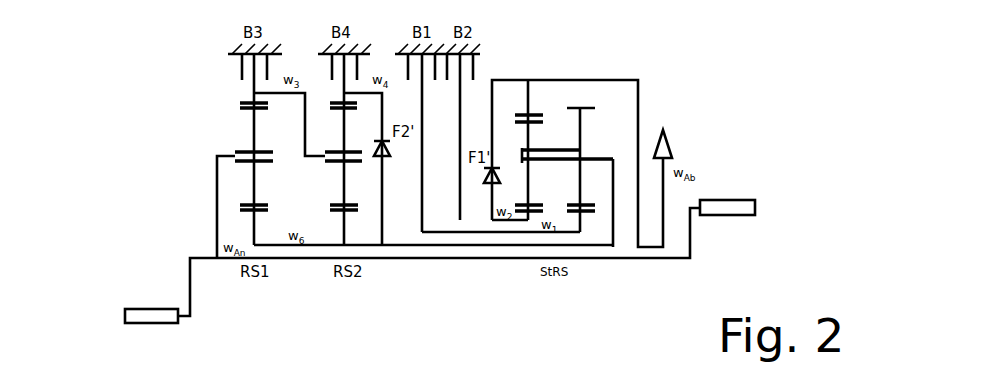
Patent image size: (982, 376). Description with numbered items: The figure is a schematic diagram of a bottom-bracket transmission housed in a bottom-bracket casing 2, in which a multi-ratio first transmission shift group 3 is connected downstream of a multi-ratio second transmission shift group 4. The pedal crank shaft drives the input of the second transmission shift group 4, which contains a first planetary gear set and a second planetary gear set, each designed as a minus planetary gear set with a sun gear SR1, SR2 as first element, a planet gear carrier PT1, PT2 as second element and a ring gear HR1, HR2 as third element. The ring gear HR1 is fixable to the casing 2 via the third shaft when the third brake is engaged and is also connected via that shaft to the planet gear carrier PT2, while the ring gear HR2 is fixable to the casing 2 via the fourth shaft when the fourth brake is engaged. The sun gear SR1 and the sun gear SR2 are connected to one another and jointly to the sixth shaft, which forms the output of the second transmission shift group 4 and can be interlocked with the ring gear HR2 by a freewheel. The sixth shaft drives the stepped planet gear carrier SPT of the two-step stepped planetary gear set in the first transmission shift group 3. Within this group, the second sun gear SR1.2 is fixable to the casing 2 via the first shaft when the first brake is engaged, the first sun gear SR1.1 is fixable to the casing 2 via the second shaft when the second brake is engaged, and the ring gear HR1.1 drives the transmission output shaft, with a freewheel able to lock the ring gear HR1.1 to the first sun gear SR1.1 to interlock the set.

The bottom-bracket casing 2 is at (475, 48).
The first transmission shift group 3 is at (585, 169).
The second transmission shift group 4 is at (305, 256).
The ring gear of the first planetary gear set HR1 is at (250, 102).
The ring gear of the second planetary gear set HR2 is at (337, 102).
The planet gear carrier of the first planetary gear set PT1 is at (229, 153).
The planet gear carrier of the second planetary gear set PT2 is at (315, 160).
The sun gear of the first planetary gear set SR1 is at (250, 214).
The sun gear of the second planetary gear set SR2 is at (353, 213).
The ring gear of the stepped planetary gear set HR1.1 is at (525, 113).
The first sun gear of the stepped planetary gear set SR1.1 is at (520, 215).
The second sun gear of the stepped planetary gear set SR1.2 is at (590, 215).
The stepped planet gear carrier SPT is at (600, 152).